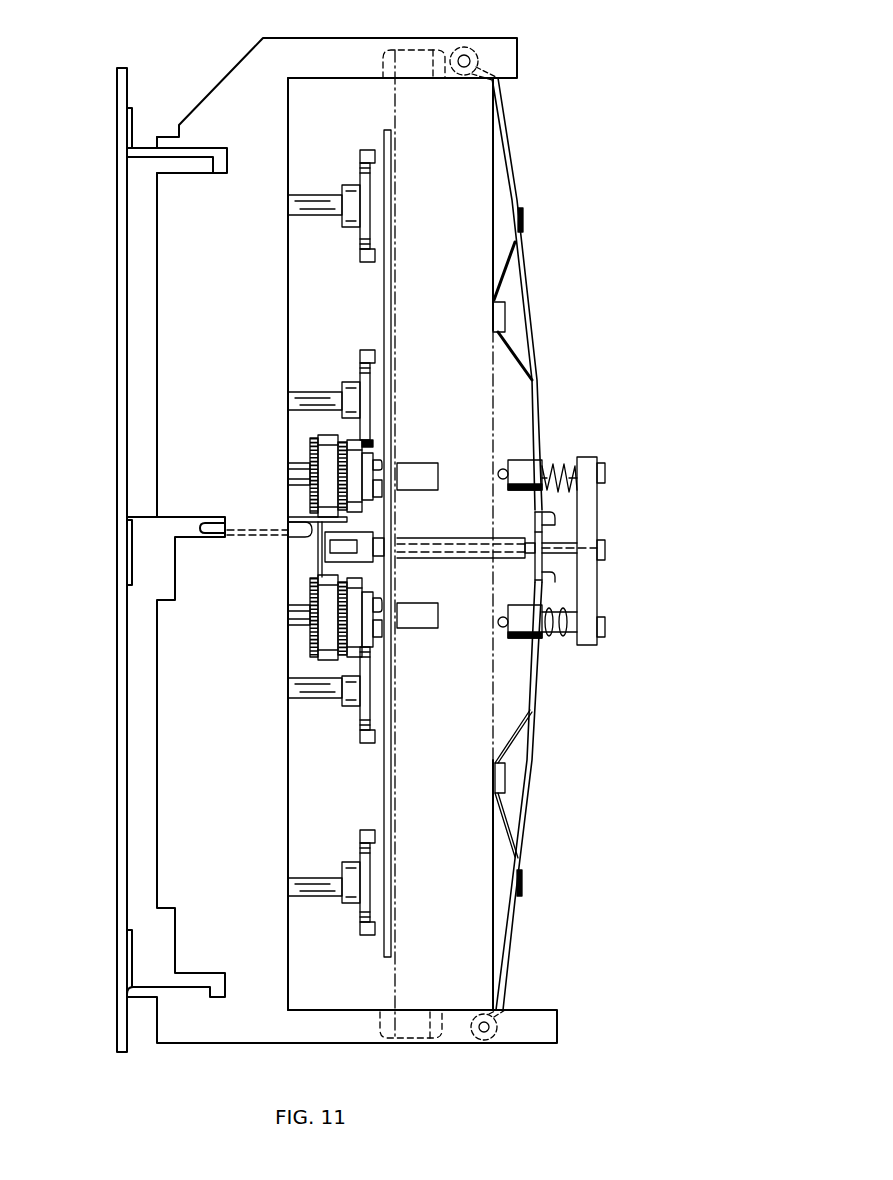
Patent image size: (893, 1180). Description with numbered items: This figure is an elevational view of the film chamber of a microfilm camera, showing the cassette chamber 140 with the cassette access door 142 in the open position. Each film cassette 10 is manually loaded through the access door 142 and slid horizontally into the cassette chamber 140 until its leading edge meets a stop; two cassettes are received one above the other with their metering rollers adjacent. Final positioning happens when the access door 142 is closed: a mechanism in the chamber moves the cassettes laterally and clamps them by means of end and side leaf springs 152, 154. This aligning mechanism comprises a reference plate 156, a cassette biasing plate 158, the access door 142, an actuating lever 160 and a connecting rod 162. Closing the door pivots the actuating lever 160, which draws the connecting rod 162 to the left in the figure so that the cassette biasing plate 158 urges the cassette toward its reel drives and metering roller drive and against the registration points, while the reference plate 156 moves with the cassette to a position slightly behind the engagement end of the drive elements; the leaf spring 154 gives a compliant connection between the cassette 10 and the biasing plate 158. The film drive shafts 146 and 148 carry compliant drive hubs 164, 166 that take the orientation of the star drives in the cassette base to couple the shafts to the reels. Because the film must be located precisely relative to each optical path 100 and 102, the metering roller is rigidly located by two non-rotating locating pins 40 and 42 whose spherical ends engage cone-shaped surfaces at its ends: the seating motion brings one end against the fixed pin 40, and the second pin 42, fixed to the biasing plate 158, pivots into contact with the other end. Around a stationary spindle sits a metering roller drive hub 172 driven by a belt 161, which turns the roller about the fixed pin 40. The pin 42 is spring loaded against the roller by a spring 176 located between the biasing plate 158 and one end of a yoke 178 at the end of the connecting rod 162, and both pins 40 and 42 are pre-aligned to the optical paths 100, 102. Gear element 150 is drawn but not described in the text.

The film cassette 10 is at (413, 97).
The locating pin 40 is at (380, 465).
The locating pin 42 is at (499, 476).
The optical path means 100 is at (427, 470).
The optical path means 102 is at (434, 615).
The cassette chamber 140 is at (512, 440).
The cassette access door 142 is at (118, 468).
The film drive shaft 146 is at (316, 392).
The film drive shaft 148 is at (316, 197).
The gear 150 is at (309, 452).
The end leaf spring 152 is at (400, 56).
The side leaf spring 154 is at (495, 290).
The reference plate 156 is at (392, 260).
The cassette biasing plate 158 is at (532, 323).
The actuating lever 160 is at (290, 520).
The belt 161 is at (320, 570).
The connecting rod 162 is at (480, 537).
The compliant drive hub 164 is at (368, 350).
The compliant drive hub 166 is at (366, 150).
The metering roller drive hub 172 is at (378, 491).
The spring 176 is at (563, 458).
The yoke 178 is at (588, 604).